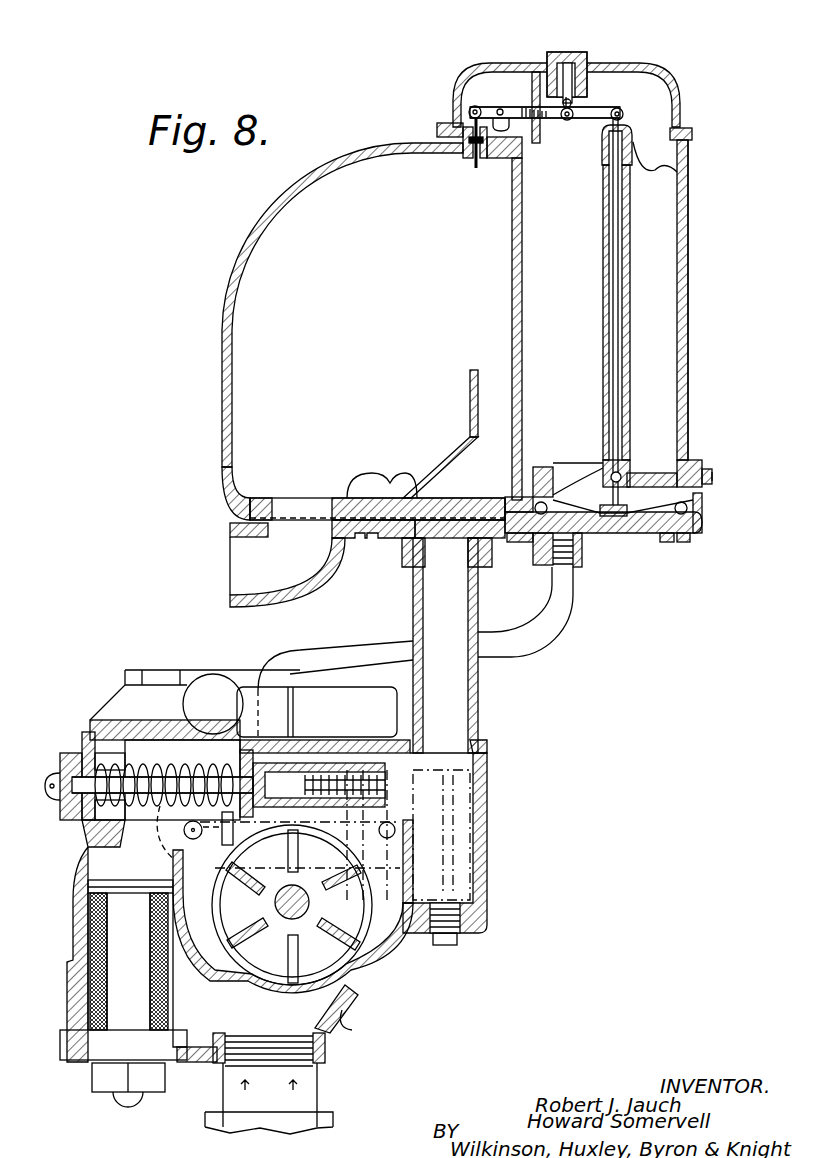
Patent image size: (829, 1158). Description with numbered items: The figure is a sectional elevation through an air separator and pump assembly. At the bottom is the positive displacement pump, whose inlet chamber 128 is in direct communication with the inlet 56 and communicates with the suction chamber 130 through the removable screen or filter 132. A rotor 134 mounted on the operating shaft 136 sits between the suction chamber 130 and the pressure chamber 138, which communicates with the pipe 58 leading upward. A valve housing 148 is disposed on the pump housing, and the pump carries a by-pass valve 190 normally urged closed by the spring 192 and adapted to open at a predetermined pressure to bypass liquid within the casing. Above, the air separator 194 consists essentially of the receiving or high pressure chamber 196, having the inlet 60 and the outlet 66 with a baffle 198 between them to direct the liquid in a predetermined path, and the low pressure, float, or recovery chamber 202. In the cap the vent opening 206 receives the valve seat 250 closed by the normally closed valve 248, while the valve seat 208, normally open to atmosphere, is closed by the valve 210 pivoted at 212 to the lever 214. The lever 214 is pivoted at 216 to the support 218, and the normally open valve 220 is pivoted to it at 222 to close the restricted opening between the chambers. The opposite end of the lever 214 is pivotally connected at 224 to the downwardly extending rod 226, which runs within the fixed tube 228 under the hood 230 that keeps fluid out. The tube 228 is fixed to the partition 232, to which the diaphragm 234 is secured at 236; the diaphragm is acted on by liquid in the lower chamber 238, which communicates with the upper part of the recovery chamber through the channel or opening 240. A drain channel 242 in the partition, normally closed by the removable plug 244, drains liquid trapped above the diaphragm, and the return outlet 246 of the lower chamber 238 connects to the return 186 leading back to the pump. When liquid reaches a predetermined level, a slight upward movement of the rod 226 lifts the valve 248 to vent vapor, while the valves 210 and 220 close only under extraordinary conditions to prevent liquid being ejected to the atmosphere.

The inlet 56 is at (310, 1094).
The pipe 58 is at (472, 688).
The inlet 60 is at (410, 541).
The outlet 66 is at (250, 608).
The inlet chamber 128 is at (360, 1020).
The suction chamber 130 is at (93, 863).
The removable screen or filter 132 is at (165, 1004).
The rotor 134 is at (335, 960).
The operating shaft 136 is at (288, 912).
The pressure chamber 138 is at (486, 740).
The valve housing 148 is at (452, 868).
The return 186 is at (577, 612).
The by-pass valve 190 is at (240, 760).
The spring 192 is at (158, 770).
The air separator 194 is at (689, 370).
The receiving or high pressure chamber 196 is at (230, 390).
The baffle 198 is at (456, 458).
The low pressure, float, or recovery chamber 202 is at (689, 292).
The vent opening 206 is at (550, 58).
The valve seat 208 is at (573, 110).
The valve 210 is at (600, 110).
The pivotal connection 212 is at (575, 122).
The lever 214 is at (621, 108).
The pivot 216 is at (508, 99).
The support 218 is at (537, 143).
The normally open valve 220 is at (470, 140).
The pivot 222 is at (476, 106).
The pivotal connection 224 is at (592, 118).
The rod 226 is at (620, 348).
The fixed tube 228 is at (631, 316).
The hood 230 is at (624, 116).
The partition 232 is at (633, 465).
The diaphragm 234 is at (640, 518).
The securing means 236 is at (702, 500).
The lower chamber 238 is at (704, 522).
The channel or opening 240 is at (537, 468).
The drain channel 242 is at (660, 472).
The removable plug 244 is at (712, 468).
The return outlet 246 is at (578, 553).
The valve 248 is at (570, 62).
The valve seat 250 is at (596, 72).